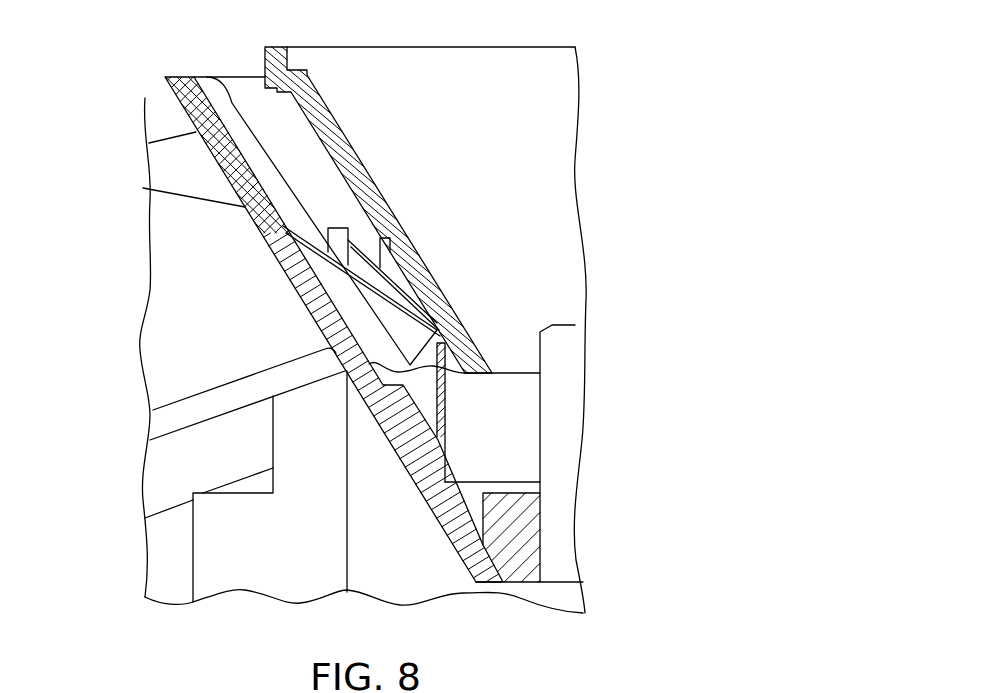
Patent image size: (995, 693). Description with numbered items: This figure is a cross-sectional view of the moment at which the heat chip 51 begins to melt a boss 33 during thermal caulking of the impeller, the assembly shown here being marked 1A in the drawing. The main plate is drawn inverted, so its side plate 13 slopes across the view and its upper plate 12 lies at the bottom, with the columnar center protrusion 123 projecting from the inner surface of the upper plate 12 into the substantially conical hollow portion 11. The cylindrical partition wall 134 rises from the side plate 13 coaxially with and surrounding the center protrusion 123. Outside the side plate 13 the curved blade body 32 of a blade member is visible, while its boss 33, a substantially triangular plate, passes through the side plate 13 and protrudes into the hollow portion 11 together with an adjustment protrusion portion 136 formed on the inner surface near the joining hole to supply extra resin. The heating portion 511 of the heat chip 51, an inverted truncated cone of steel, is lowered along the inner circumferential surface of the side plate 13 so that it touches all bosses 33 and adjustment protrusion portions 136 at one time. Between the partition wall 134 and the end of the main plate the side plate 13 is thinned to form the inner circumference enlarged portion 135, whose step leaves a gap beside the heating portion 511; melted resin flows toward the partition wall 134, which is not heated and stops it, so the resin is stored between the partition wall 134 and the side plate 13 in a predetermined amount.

The heat chip 51 is at (319, 44).
The heating portion 511 is at (337, 127).
The hollow portion 11 is at (265, 112).
The inner circumference enlarged portion 135 is at (328, 232).
The adjustment protrusion portion 136 is at (345, 237).
The boss 33 is at (397, 278).
The blade body 32 is at (175, 275).
The partition wall 134 is at (447, 413).
The center protrusion 123 is at (533, 527).
The side plate 13 is at (428, 503).
The display device 1A is at (397, 460).
The upper plate 12 is at (523, 584).